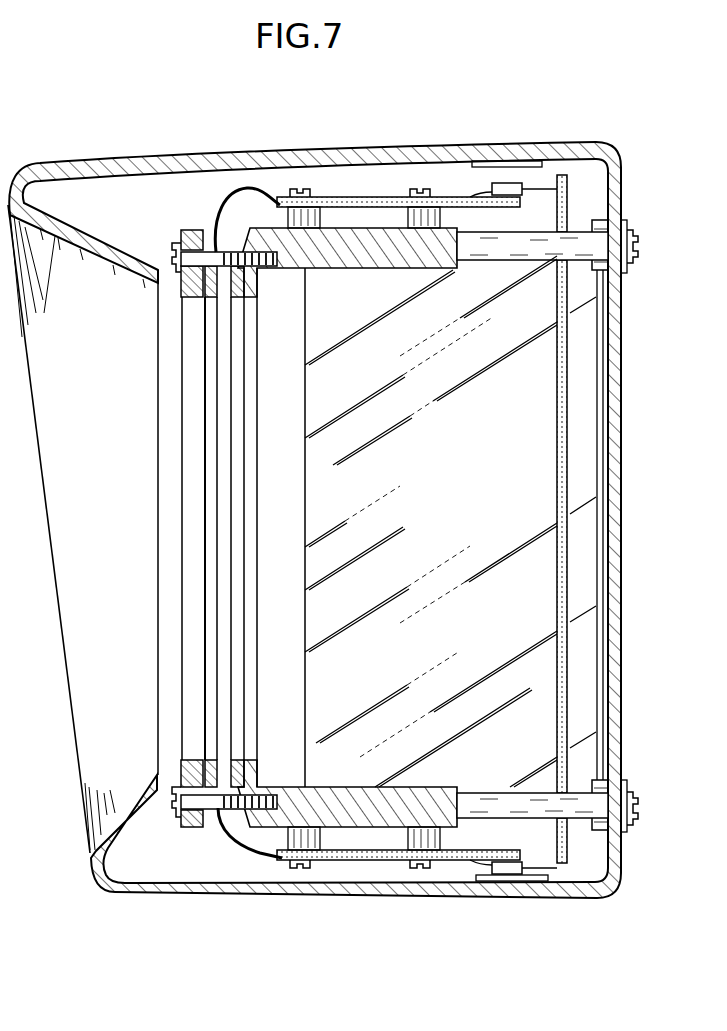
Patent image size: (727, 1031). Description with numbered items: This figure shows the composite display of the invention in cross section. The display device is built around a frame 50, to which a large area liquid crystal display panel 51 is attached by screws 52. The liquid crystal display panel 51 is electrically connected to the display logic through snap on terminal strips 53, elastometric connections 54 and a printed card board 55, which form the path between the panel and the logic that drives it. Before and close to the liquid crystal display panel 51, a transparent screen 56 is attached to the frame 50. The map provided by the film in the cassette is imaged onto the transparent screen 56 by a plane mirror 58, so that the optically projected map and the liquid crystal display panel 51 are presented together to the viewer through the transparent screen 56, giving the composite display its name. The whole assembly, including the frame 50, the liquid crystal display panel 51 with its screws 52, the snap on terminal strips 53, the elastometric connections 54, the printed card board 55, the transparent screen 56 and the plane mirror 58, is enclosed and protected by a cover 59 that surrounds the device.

The frame 50 is at (547, 248).
The large area liquid crystal display panel 51 is at (222, 549).
The screws 52 is at (178, 822).
The snap on terminal strips 53 is at (212, 761).
The elastometric connections 54 is at (241, 836).
The printed card board 55 is at (561, 556).
The transparent screen 56 is at (190, 476).
The plane mirror 58 is at (486, 515).
The cover 59 is at (106, 301).